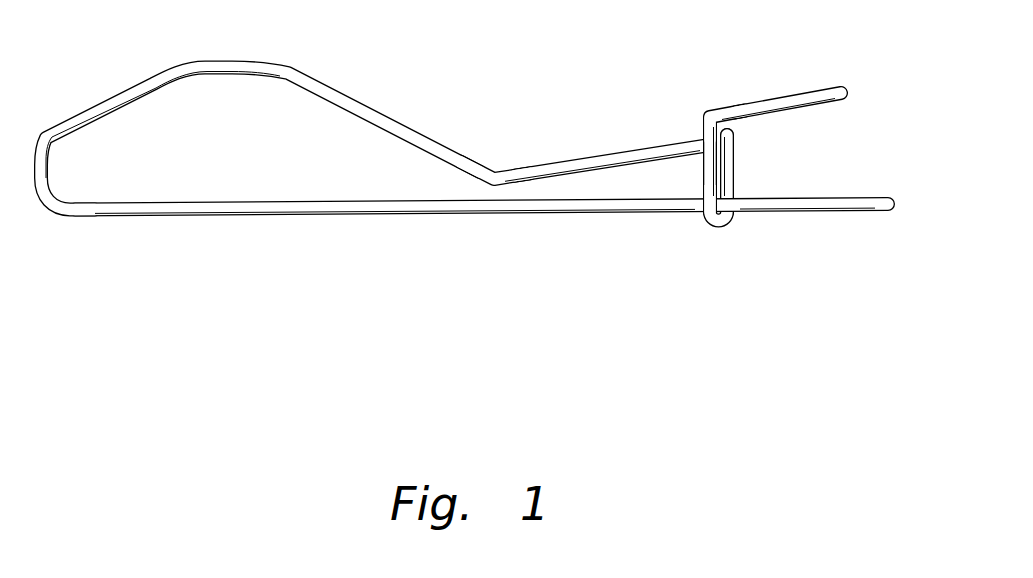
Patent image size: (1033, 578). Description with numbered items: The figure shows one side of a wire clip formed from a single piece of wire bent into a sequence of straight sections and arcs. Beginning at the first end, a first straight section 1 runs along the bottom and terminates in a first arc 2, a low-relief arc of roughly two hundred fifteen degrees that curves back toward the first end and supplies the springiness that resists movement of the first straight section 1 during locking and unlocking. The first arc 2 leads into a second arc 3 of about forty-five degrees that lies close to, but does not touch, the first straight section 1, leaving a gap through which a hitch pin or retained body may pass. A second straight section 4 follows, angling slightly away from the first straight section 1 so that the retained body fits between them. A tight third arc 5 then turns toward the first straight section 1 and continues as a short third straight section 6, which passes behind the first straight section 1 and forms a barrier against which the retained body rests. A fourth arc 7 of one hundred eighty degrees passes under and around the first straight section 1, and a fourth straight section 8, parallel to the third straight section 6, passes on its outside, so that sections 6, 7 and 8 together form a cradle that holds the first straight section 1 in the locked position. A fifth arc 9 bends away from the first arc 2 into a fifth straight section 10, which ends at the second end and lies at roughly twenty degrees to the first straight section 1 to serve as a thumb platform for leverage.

The first straight section 1 is at (545, 217).
The first arc 2 is at (123, 80).
The second arc 3 is at (497, 172).
The second straight section 4 is at (594, 152).
The third arc 5 is at (735, 131).
The third straight section 6 is at (738, 172).
The fourth arc 7 is at (732, 220).
The fourth straight section 8 is at (705, 127).
The fifth arc 9 is at (713, 115).
The fifth straight section 10 is at (815, 87).